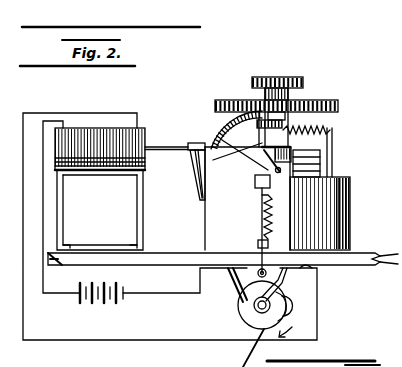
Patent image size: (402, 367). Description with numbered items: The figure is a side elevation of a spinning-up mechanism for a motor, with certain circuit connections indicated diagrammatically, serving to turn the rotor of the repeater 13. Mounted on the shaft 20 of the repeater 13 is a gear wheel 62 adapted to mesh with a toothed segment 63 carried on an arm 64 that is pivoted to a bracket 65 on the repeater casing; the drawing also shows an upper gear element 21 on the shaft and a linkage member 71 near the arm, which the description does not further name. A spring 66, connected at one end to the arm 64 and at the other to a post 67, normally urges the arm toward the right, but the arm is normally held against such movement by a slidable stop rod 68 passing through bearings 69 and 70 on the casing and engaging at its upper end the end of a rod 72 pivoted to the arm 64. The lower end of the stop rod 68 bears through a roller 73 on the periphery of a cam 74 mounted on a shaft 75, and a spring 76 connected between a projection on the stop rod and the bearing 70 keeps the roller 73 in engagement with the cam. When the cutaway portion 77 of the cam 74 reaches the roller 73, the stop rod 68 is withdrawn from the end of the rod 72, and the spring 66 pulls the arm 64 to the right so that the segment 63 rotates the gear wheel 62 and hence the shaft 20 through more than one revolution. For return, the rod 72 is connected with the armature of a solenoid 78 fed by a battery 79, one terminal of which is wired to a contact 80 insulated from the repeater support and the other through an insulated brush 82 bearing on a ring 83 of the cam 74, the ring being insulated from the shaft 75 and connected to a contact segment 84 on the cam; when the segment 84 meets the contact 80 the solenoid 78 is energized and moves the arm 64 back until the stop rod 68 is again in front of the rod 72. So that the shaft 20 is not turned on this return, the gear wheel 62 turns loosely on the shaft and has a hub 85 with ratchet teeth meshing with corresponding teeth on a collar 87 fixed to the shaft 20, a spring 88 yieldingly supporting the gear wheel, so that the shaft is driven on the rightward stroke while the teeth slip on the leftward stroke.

The repeater 13 is at (247, 198).
The shaft 20 is at (255, 129).
The gear 21 is at (277, 77).
The gear wheel 62 is at (340, 108).
The toothed segment 63 is at (222, 137).
The arm 64 is at (236, 152).
The bracket 65 is at (279, 173).
The spring 66 is at (334, 132).
The post 67 is at (333, 160).
The slidable stop rod 68 is at (262, 200).
The bearing 69 is at (255, 183).
The bearing 70 is at (258, 243).
The arm 71 is at (256, 151).
The rod 72 is at (174, 150).
The roller 73 is at (252, 276).
The cam 74 is at (252, 348).
The shaft 75 is at (285, 290).
The spring 76 is at (318, 213).
The cutaway portion 77 is at (240, 315).
The solenoid 78 is at (98, 140).
The battery 79 is at (112, 289).
The contact 80 is at (238, 288).
The insulated brush 82 is at (313, 278).
The ring 83 is at (257, 322).
The contact segment 84 is at (284, 316).
The hub 85 is at (264, 95).
The collar 87 is at (290, 98).
The spring 88 is at (306, 125).